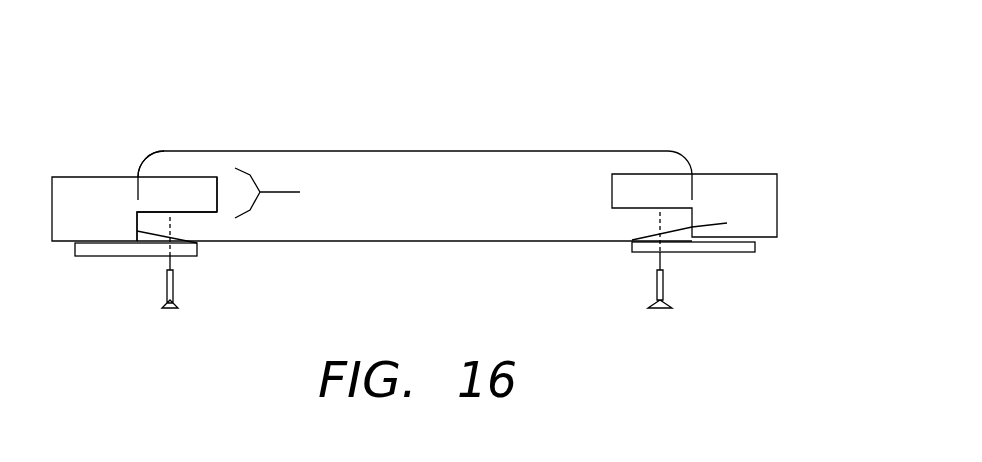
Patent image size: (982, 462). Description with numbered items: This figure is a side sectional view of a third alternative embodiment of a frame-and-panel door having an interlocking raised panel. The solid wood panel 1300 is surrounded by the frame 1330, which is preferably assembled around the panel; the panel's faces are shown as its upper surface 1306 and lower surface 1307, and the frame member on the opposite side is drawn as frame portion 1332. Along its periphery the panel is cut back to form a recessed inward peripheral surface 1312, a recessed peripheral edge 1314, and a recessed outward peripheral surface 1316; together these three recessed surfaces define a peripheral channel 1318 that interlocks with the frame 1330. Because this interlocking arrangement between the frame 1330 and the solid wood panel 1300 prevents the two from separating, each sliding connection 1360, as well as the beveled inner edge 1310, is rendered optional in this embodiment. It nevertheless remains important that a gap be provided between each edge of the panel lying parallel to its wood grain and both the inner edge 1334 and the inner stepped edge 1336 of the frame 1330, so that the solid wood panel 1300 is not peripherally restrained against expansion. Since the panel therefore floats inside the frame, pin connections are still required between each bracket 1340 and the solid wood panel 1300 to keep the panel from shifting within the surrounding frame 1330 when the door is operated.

The solid wood panel 1300 is at (414, 191).
The top surface of body 1306 is at (524, 151).
The bottom surface of body 1307 is at (428, 243).
The beveled inner edge 1310 is at (148, 235).
The recessed inward peripheral surface 1312 is at (162, 178).
The recessed peripheral edge 1314 is at (215, 200).
The recessed outward peripheral surface 1316 is at (197, 213).
The peripheral channel 1318 is at (298, 193).
The frame 1330 is at (78, 196).
The right bracket 1332 is at (638, 208).
The inner edge 1334 is at (612, 192).
The inner stepped edge 1336 is at (727, 223).
The bracket 1340 is at (87, 256).
The sliding connection 1360 is at (148, 318).